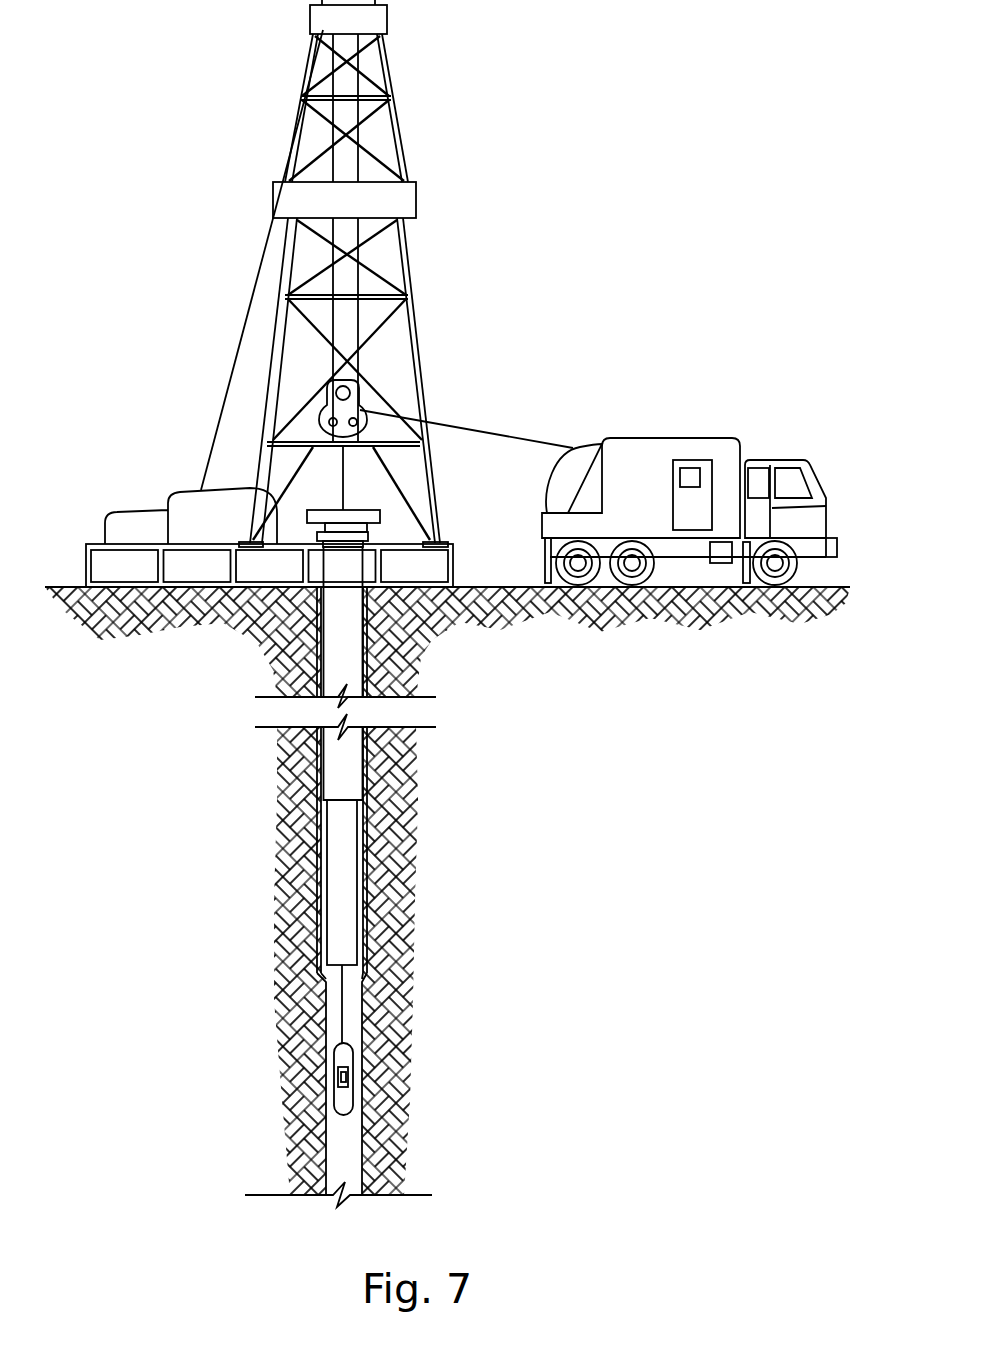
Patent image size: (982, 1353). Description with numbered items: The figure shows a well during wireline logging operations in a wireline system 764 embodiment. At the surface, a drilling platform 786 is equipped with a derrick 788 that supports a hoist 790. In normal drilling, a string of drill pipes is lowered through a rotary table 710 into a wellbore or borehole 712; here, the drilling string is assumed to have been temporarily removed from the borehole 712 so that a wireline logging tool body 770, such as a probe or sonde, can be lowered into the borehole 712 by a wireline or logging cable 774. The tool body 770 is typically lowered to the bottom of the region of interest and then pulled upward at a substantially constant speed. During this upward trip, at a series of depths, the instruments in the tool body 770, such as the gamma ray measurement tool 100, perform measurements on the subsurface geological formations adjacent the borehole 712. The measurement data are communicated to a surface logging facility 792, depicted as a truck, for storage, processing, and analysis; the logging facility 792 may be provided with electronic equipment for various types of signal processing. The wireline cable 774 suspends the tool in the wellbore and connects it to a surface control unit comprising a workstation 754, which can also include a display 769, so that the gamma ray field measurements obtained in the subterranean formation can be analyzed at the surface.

The wireline system 764 is at (627, 205).
The derrick 788 is at (435, 529).
The hoist 790 is at (360, 397).
The rotary table 710 is at (368, 510).
The drilling platform 786 is at (455, 568).
The surface logging facility 792 is at (689, 477).
The workstation 754 is at (673, 510).
The display / computer 769 is at (690, 465).
The wireline cable 774 is at (473, 428).
The borehole 712 is at (327, 995).
The wireline logging tool body 770 is at (409, 1064).
The gamma ray measurement tool 100 is at (347, 1077).